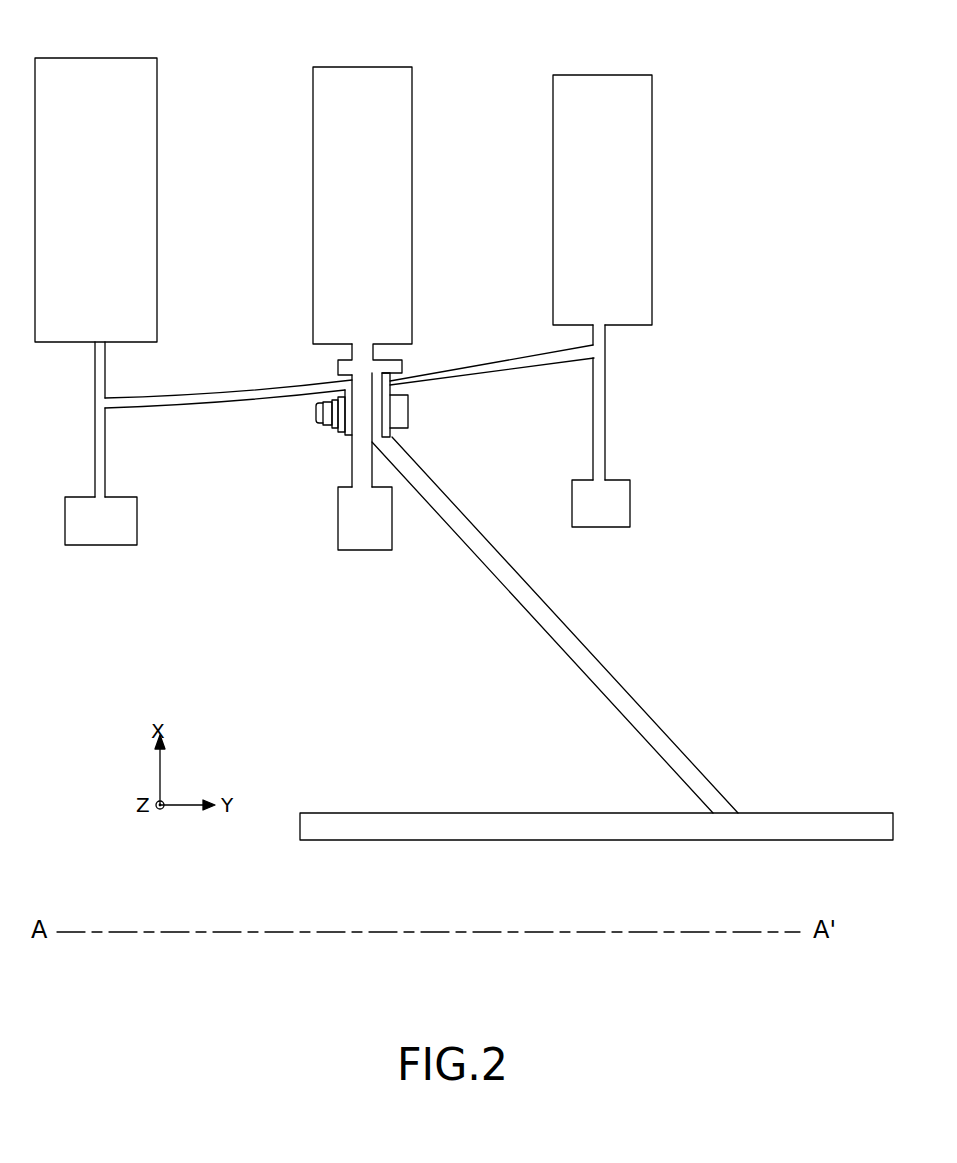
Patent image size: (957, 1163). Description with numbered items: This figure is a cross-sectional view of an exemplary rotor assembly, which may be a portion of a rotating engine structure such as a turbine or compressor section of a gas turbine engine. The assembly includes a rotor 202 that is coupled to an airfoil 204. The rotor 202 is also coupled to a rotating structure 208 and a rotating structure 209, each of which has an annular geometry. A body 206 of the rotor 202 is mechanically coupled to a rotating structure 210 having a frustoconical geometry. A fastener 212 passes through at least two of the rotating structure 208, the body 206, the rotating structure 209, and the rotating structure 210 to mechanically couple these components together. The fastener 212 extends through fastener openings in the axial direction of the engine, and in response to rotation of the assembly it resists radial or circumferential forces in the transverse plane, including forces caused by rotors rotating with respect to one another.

The rotor 202 is at (366, 552).
The airfoil 204 is at (413, 285).
The body 206 is at (363, 430).
The rotating structure 208 is at (288, 380).
The rotating structure 209 is at (475, 370).
The rotating structure 210 is at (392, 440).
The fastener 212 is at (317, 424).